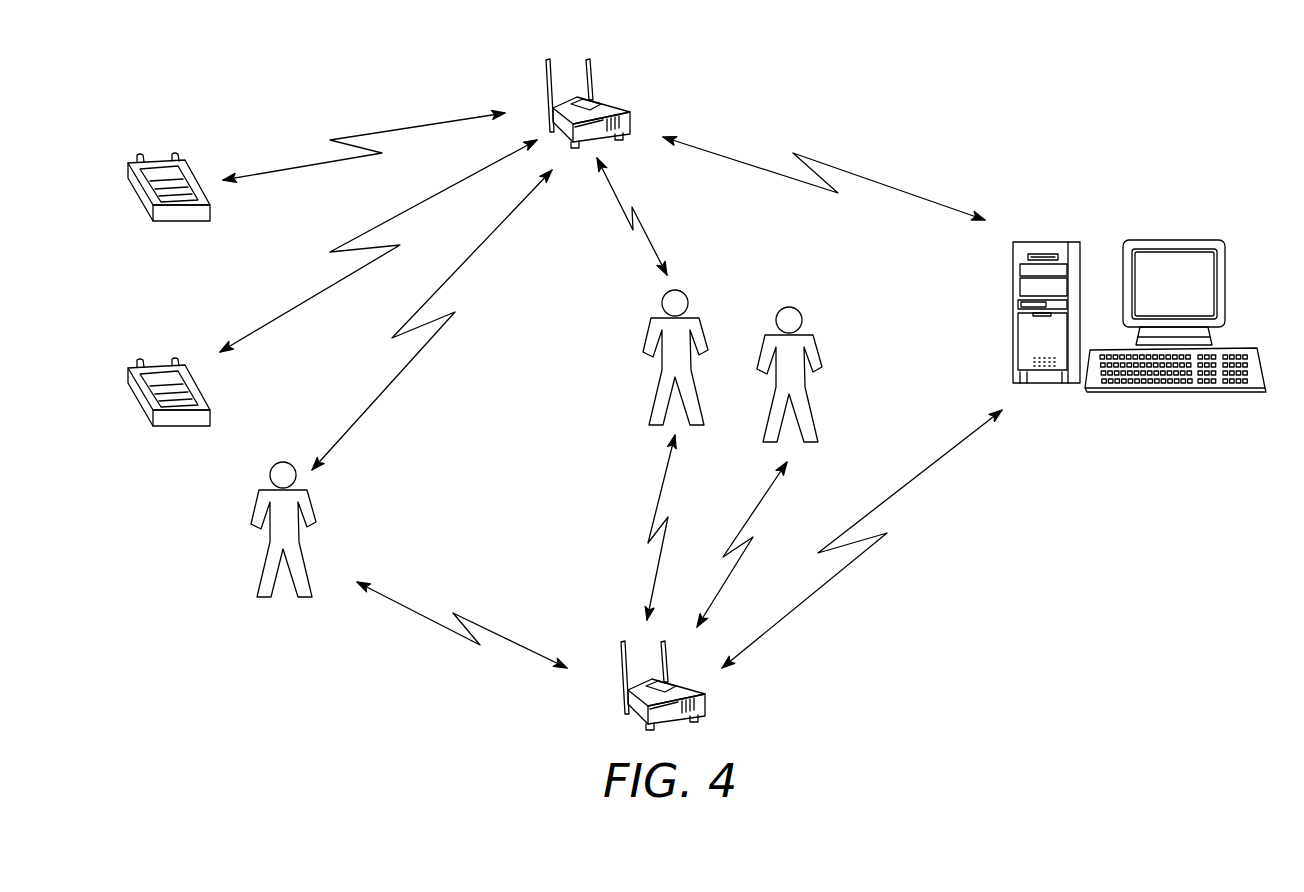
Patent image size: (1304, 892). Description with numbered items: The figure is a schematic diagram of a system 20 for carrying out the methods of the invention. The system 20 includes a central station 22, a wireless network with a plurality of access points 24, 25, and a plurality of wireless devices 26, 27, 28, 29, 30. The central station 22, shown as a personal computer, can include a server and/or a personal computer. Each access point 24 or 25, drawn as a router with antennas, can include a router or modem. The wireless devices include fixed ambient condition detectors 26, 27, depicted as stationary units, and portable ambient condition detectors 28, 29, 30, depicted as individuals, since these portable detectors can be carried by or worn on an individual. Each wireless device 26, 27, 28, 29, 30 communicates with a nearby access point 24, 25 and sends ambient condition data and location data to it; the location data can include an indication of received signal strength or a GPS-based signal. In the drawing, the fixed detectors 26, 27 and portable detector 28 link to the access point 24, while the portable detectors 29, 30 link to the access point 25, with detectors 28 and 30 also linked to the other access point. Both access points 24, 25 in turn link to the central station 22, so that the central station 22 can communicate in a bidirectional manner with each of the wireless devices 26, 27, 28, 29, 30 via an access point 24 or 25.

The system 20 is at (932, 575).
The central station 22 is at (1090, 228).
The access point 24 is at (616, 103).
The access point 25 is at (687, 683).
The fixed ambient condition detector 26 is at (156, 160).
The fixed ambient condition detector 27 is at (156, 365).
The portable ambient condition detector 28 is at (270, 475).
The portable ambient condition detector 29 is at (790, 307).
The portable ambient condition detector 30 is at (662, 303).